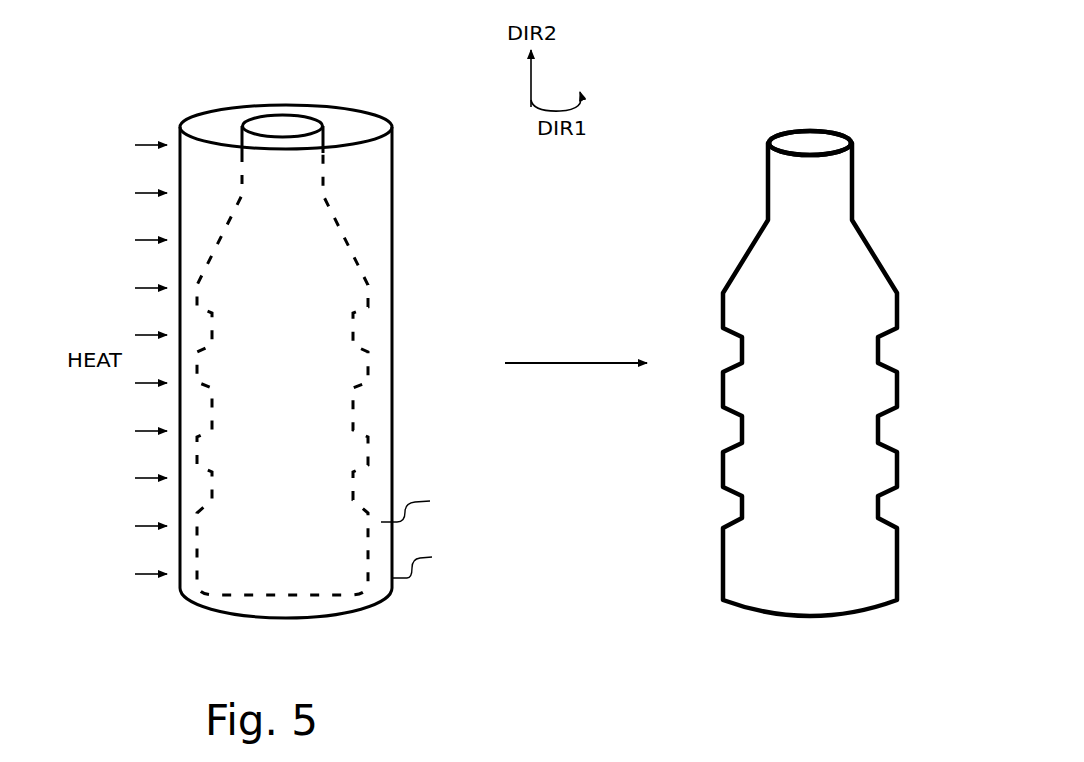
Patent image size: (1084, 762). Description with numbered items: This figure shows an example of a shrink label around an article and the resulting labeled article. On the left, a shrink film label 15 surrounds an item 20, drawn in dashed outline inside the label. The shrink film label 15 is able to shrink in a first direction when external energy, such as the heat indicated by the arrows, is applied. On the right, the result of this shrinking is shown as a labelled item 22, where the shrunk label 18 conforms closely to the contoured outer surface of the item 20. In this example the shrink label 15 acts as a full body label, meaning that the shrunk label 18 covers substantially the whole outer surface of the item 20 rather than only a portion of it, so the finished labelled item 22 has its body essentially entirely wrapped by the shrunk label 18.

The roll fed shrink film label 15 is at (388, 188).
The item 20 is at (320, 375).
The shrunk label 18 is at (767, 287).
The labelled item 22 is at (808, 116).